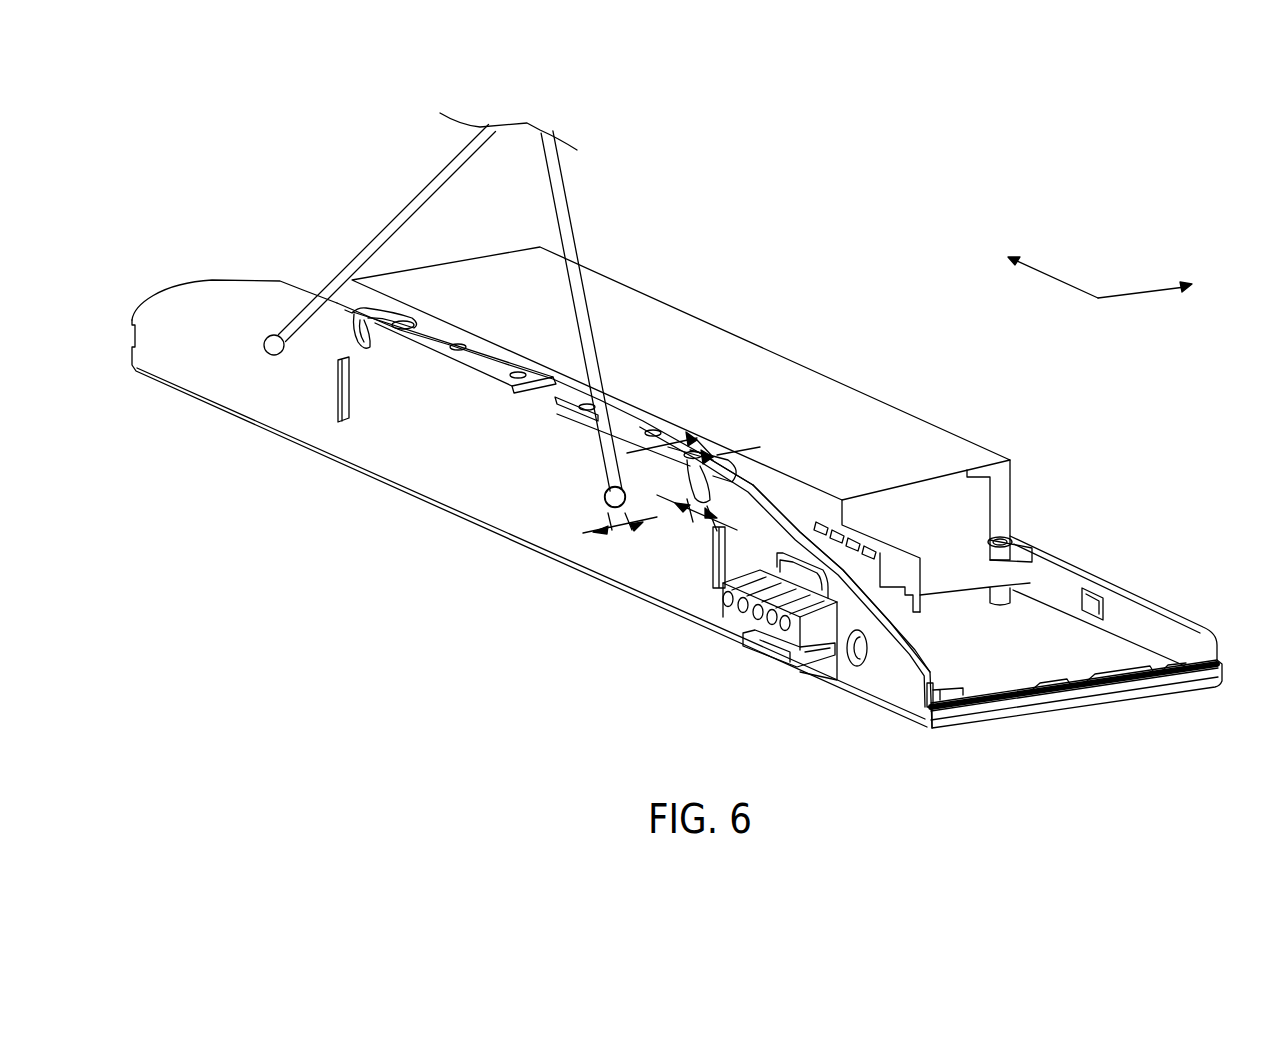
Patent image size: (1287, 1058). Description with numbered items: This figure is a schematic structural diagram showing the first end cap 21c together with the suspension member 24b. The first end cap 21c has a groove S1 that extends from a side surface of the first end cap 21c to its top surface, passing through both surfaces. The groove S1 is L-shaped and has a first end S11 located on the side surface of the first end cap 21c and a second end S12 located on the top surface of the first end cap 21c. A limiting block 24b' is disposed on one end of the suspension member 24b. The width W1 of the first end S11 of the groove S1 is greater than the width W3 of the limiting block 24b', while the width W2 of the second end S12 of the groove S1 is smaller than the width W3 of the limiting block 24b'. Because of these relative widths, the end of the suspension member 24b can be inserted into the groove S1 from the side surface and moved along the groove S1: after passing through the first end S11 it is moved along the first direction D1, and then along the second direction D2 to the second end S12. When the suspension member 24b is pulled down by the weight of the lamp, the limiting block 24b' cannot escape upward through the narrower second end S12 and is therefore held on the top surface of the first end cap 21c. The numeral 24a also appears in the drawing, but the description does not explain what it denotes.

The first end cap 21c is at (308, 270).
The suspension member 24b is at (593, 319).
The limiting block 24b' is at (518, 539).
The connector terminal 24a is at (808, 662).
The groove S1 is at (722, 452).
The first end S11 is at (767, 497).
The second end S12 is at (693, 440).
The width of the first end W1 is at (695, 508).
The width of the second end W2 is at (660, 447).
The width of the limiting block W3 is at (625, 525).
The first direction D1 is at (1171, 288).
The second direction D2 is at (1029, 269).